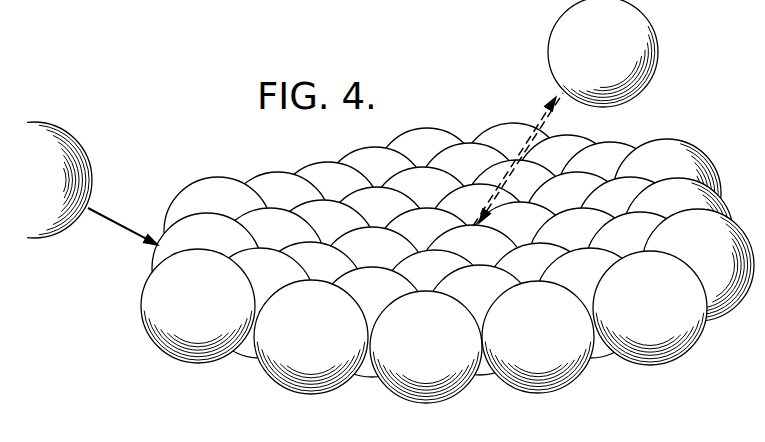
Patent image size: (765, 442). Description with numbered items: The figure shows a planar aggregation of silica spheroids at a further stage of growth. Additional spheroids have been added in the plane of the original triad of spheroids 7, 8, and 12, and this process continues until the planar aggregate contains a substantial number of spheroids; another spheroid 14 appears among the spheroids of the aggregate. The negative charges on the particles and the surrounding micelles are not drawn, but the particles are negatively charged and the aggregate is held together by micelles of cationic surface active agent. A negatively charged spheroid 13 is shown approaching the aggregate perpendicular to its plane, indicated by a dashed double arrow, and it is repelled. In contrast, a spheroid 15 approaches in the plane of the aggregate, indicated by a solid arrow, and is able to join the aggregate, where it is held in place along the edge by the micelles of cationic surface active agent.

The spheroid 7 is at (427, 262).
The spheroid 8 is at (473, 280).
The spheroid 12 is at (372, 282).
The negatively charged spheroid 13 is at (565, 113).
The surface atom 14 is at (520, 256).
The spheroid 15 is at (79, 183).